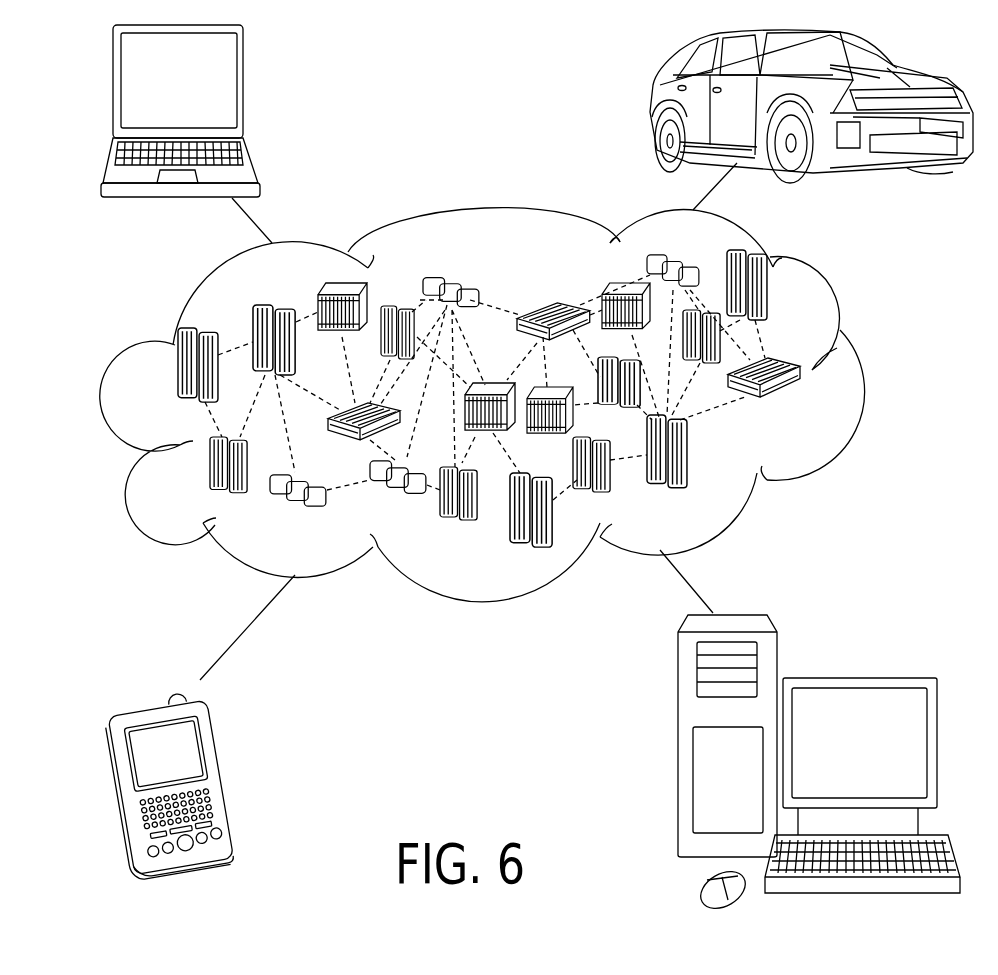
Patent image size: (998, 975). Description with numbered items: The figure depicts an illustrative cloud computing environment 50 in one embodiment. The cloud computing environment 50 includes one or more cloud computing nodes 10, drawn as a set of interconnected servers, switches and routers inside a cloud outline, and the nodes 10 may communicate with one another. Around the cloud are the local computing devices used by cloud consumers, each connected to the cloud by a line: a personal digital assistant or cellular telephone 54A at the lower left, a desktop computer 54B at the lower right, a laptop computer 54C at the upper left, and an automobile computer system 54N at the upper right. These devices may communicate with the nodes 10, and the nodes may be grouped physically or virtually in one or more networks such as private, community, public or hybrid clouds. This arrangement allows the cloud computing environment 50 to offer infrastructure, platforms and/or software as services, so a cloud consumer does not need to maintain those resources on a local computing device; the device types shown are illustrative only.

The cloud computing nodes 10 is at (812, 416).
The cloud computing environment 50 is at (860, 373).
The personal digital assistant or cellular telephone 54A is at (233, 775).
The desktop computer 54B is at (855, 677).
The laptop computer 54C is at (244, 88).
The automobile computer system 54N is at (652, 105).